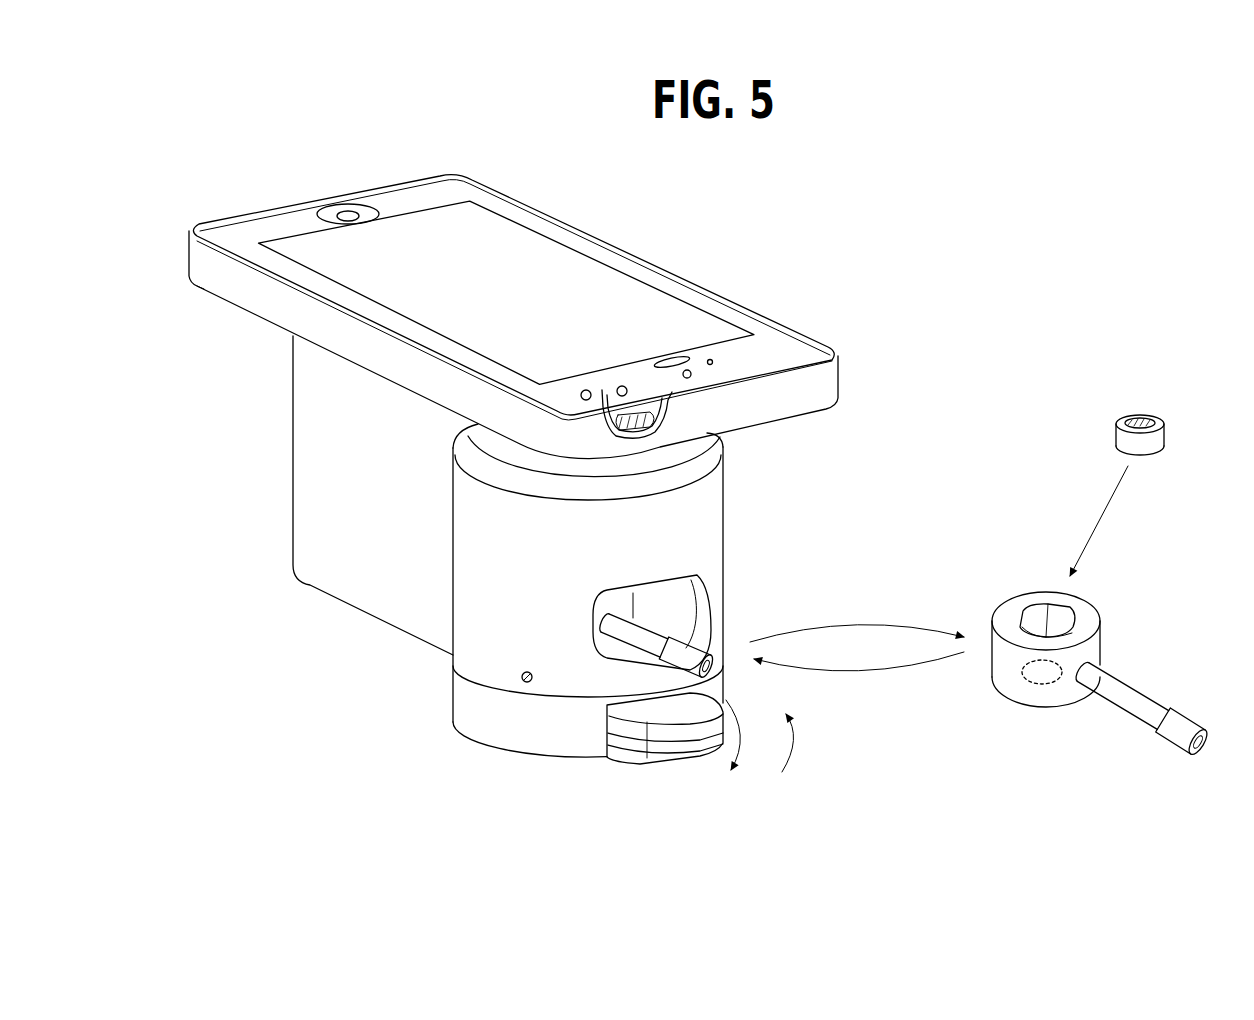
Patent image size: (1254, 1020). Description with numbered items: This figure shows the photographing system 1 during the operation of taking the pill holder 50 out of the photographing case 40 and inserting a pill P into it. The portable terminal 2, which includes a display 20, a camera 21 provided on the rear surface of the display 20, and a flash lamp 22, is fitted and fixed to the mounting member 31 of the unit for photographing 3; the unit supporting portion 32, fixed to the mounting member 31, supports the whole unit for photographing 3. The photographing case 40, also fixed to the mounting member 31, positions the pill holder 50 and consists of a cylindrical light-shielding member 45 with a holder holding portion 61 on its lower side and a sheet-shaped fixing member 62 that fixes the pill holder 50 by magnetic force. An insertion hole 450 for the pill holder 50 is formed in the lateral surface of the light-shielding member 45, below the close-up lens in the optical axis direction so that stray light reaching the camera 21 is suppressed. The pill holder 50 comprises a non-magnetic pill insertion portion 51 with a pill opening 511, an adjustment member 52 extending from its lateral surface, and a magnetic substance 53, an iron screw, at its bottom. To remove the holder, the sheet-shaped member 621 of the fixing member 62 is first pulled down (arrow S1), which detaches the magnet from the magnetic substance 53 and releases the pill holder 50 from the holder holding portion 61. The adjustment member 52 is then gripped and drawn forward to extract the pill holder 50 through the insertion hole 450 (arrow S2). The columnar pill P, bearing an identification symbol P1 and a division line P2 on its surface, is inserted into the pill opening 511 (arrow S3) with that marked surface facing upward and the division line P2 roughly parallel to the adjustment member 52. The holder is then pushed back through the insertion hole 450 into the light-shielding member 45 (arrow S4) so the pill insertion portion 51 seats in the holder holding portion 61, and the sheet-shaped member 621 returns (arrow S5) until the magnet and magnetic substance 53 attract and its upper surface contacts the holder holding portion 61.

The photographing system 1 is at (862, 246).
The portable terminal 2 is at (544, 196).
The display 20 is at (600, 270).
The camera 21 is at (586, 389).
The flash lamp 22 is at (625, 385).
The unit for photographing 3 is at (232, 356).
The mounting member 31 is at (217, 268).
The unit supporting portion 32 is at (300, 482).
The photographing case 40 is at (772, 465).
The light-shielding member 45 is at (706, 520).
The insertion hole 450 is at (710, 577).
The holder holding portion 61 is at (486, 722).
The fixing member 62 is at (622, 774).
The sheet-shaped member 621 is at (666, 754).
The pill holder 50 is at (1099, 583).
The pill insertion portion 51 is at (1094, 604).
The pill opening 511 is at (1030, 603).
The adjustment member 52 is at (1126, 706).
The magnetic substance 53 is at (1048, 687).
The pill P is at (1182, 412).
The identification symbol P1 is at (1142, 414).
The division line P2 is at (1120, 430).
The arrow S1 is at (750, 735).
The arrow S2 is at (857, 616).
The arrow S3 is at (1096, 521).
The arrow S4 is at (859, 679).
The arrow S5 is at (804, 743).